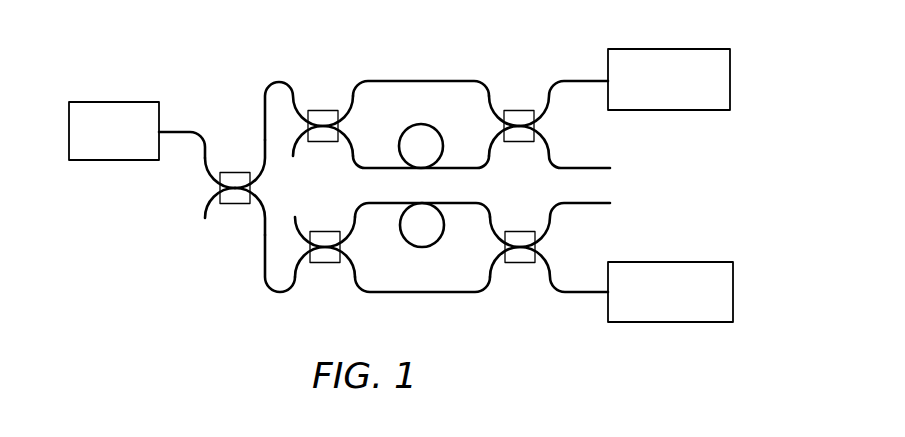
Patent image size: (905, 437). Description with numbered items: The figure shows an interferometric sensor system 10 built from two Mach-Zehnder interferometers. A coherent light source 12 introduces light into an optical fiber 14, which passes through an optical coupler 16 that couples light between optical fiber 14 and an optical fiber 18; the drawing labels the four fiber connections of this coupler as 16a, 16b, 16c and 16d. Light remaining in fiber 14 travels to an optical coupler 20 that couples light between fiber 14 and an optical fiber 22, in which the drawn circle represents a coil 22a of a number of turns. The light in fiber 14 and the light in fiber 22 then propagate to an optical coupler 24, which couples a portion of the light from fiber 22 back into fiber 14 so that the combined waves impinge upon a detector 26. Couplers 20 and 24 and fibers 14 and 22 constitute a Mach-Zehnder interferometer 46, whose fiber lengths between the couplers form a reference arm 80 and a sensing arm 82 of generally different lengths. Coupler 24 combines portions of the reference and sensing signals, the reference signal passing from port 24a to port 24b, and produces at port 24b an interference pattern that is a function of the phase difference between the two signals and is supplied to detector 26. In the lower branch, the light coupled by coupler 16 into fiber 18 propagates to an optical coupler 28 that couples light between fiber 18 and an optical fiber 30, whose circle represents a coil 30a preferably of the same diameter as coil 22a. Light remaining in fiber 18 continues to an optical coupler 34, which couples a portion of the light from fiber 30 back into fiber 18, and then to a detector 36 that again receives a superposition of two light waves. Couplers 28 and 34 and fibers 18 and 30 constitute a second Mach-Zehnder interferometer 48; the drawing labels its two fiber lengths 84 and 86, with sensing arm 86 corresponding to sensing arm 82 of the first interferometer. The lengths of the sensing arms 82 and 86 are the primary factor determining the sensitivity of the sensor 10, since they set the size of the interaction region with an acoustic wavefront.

The interferometric sensor system 10 is at (179, 309).
The light source 12 is at (110, 101).
The optical fiber 14 is at (191, 131).
The optical coupler 16 is at (233, 204).
The coupler 16 first port 16a is at (193, 176).
The coupler 16 second port 16b is at (278, 175).
The coupler 16 third port 16c is at (195, 204).
The coupler 16 fourth port 16d is at (278, 203).
The optical fiber 18 is at (271, 291).
The optical coupler 20 is at (322, 110).
The optical fiber 22 is at (352, 159).
The coil 22a is at (437, 130).
The optical coupler 24 is at (519, 142).
The port 24a is at (500, 96).
The port 24b is at (556, 118).
The detector 26 is at (685, 49).
The optical coupler 28 is at (325, 263).
The optical fiber 30 is at (490, 213).
The coil 30a is at (437, 241).
The optical coupler 34 is at (518, 263).
The detector 36 is at (689, 262).
The Mach-Zehnder interferometer 46 is at (468, 51).
The Mach-Zehnder interferometer 48 is at (478, 314).
The reference arm 80 is at (408, 68).
The sensing arm 82 is at (381, 152).
The second interferometer arm 84 is at (385, 306).
The sensing arm 86 is at (382, 217).